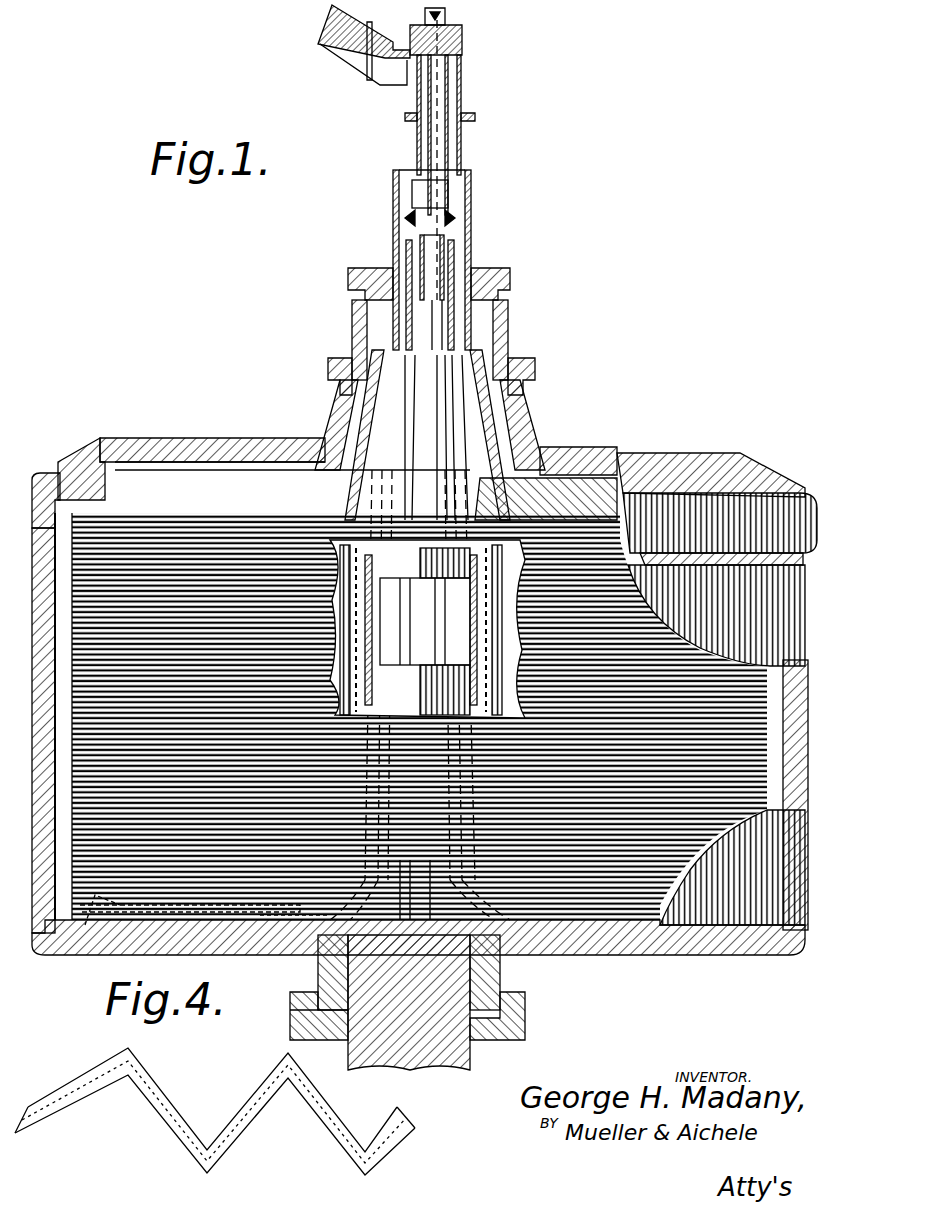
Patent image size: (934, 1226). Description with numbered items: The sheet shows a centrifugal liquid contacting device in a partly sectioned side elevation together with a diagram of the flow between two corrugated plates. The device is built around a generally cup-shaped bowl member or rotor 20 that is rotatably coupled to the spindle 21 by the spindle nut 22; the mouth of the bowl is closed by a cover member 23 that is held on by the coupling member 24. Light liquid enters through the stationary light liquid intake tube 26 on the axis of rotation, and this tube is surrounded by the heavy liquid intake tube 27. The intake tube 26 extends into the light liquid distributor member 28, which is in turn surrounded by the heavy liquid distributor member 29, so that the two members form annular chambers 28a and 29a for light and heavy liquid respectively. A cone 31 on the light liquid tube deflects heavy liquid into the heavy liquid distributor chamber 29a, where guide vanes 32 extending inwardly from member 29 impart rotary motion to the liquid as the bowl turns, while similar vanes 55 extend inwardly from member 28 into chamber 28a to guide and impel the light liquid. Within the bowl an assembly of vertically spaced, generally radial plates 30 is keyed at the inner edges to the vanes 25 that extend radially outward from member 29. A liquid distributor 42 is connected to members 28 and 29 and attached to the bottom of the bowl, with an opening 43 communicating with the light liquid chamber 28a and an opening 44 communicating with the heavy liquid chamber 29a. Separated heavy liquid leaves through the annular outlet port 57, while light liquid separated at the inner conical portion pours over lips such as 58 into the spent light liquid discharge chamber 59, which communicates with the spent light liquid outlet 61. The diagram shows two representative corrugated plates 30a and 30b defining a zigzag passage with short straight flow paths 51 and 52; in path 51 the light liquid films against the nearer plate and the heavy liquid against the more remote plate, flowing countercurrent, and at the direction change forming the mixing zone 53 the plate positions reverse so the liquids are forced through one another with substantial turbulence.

In FIG. 1, the bowl member 20 is at (612, 955).
In FIG. 1, the spindle 21 is at (470, 1058).
In FIG. 1, the spindle nut 22 is at (525, 1012).
In FIG. 1, the cover member 23 is at (592, 450).
In FIG. 1, the coupling member 24 is at (36, 470).
In FIG. 1, the vanes 25 is at (487, 370).
In FIG. 1, the light liquid intake tube 26 is at (448, 15).
In FIG. 1, the heavy liquid intake tube 27 is at (462, 90).
In FIG. 1, the light liquid distributor member 28 is at (455, 260).
In FIG. 1, the light liquid distributor chamber 28a is at (445, 322).
In FIG. 1, the heavy liquid distributor member 29 is at (468, 240).
In FIG. 1, the heavy liquid distributor chamber 29a is at (398, 225).
In FIG. 1, the plates 30 is at (105, 470).
In FIG. 4, the upper plate 30a is at (70, 1105).
In FIG. 4, the lower plate 30b is at (90, 1130).
In FIG. 1, the cone 31 is at (412, 215).
In FIG. 1, the guide vanes 32 is at (480, 272).
In FIG. 1, the liquid distributor 42 is at (175, 925).
In FIG. 1, the opening 43 is at (95, 932).
In FIG. 1, the opening 44 is at (275, 925).
In FIG. 4, the straight flow path 51 is at (335, 1130).
In FIG. 4, the straight flow path 52 is at (250, 1090).
In FIG. 4, the mixing zone 53 is at (283, 1095).
In FIG. 1, the vanes 55 is at (420, 618).
In FIG. 1, the annular outlet port 57 is at (330, 388).
In FIG. 1, the lips 58 is at (515, 630).
In FIG. 1, the spent light liquid discharge chamber 59 is at (380, 275).
In FIG. 1, the spent light liquid outlet 61 is at (355, 318).